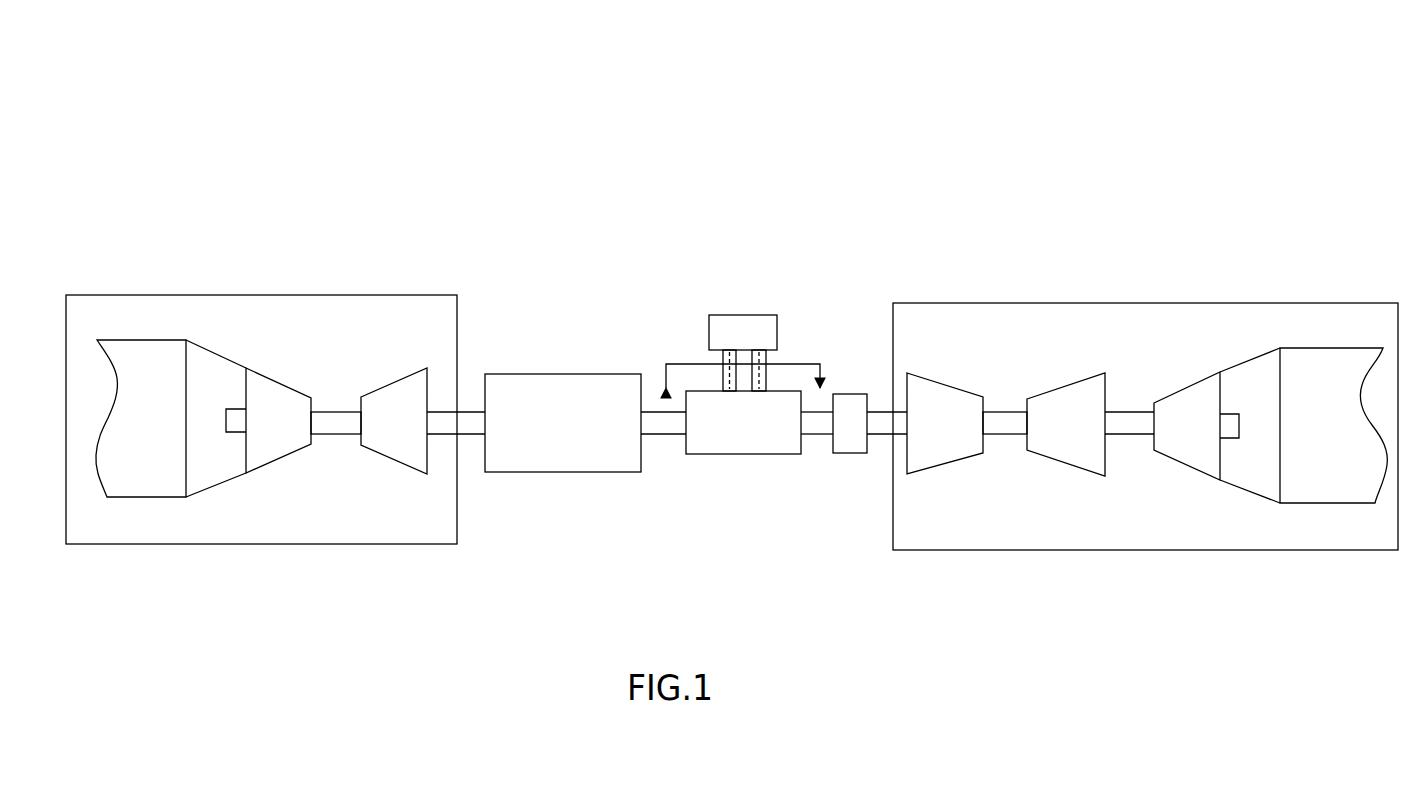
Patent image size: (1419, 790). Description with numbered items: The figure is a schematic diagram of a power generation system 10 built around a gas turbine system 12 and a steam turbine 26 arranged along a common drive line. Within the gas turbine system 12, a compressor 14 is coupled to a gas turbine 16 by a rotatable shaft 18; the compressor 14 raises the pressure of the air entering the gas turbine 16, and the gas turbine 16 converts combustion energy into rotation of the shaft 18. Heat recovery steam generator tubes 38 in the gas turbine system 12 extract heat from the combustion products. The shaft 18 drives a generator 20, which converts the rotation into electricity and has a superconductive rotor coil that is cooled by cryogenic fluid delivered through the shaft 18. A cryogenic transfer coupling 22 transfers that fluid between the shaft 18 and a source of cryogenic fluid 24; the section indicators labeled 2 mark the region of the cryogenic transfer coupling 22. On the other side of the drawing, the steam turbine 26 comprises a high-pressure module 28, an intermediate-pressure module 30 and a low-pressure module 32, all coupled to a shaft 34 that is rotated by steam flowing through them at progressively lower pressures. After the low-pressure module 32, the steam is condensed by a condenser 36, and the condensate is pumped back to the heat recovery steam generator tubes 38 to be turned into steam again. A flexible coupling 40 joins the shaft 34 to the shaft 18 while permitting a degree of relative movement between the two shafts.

The power generation system 10 is at (589, 147).
The gas turbine system 12 is at (262, 295).
The compressor 14 is at (393, 382).
The gas turbine 16 is at (277, 375).
The rotatable shaft 18 is at (349, 434).
The generator 20 is at (560, 373).
The cryogenic transfer coupling 22 is at (719, 470).
The source of cryogenic fluid 24 is at (709, 322).
The steam turbine 26 is at (1062, 303).
The high-pressure module 28 is at (946, 380).
The intermediate-pressure module 30 is at (1064, 386).
The low-pressure module 32 is at (1186, 385).
The shaft 34 is at (1010, 437).
The condenser 36 is at (1322, 504).
The heat recovery steam generator tubes 38 is at (143, 498).
The flexible coupling 40 is at (846, 394).
The section line for FIG. 2 is at (743, 390).